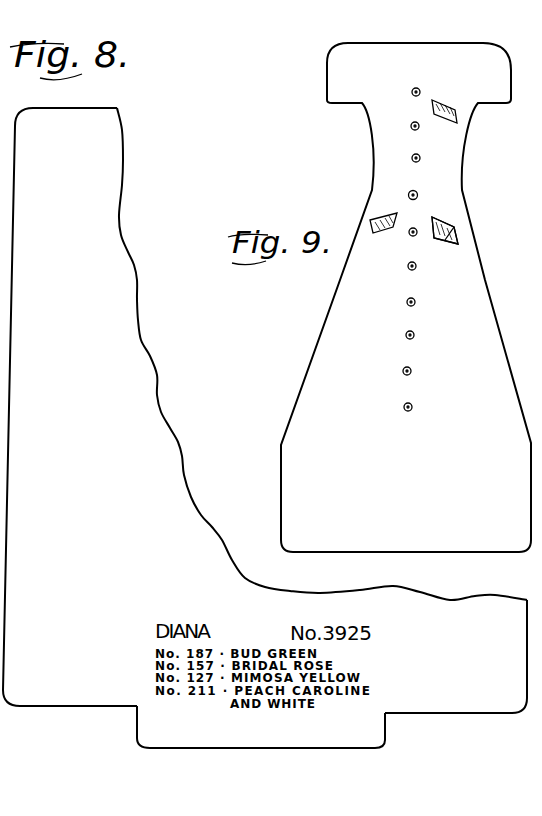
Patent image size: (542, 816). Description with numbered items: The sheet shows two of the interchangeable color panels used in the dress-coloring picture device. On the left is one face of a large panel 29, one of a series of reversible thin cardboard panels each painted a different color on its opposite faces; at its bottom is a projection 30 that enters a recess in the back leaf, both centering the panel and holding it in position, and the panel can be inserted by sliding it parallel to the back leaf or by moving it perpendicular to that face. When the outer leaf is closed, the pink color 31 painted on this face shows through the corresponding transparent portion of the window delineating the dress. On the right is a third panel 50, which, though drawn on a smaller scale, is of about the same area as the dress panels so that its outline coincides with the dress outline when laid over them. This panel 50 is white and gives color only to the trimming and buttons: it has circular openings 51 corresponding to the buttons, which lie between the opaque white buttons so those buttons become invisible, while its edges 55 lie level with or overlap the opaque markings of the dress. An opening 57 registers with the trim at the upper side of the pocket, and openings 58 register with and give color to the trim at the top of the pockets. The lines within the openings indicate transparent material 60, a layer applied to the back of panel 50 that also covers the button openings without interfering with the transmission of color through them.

In FIG. 8, the large panel 29 is at (88, 120).
In FIG. 8, the projection 30 is at (260, 737).
In FIG. 8, the pink color 31 is at (115, 353).
In FIG. 9, the third panel 50 is at (338, 278).
In FIG. 9, the circular openings 51 is at (412, 159).
In FIG. 9, the edges 55 is at (350, 103).
In FIG. 9, the opening 57 is at (447, 111).
In FIG. 9, the openings 58 is at (375, 234).
In FIG. 9, the transparent material 60 is at (442, 226).